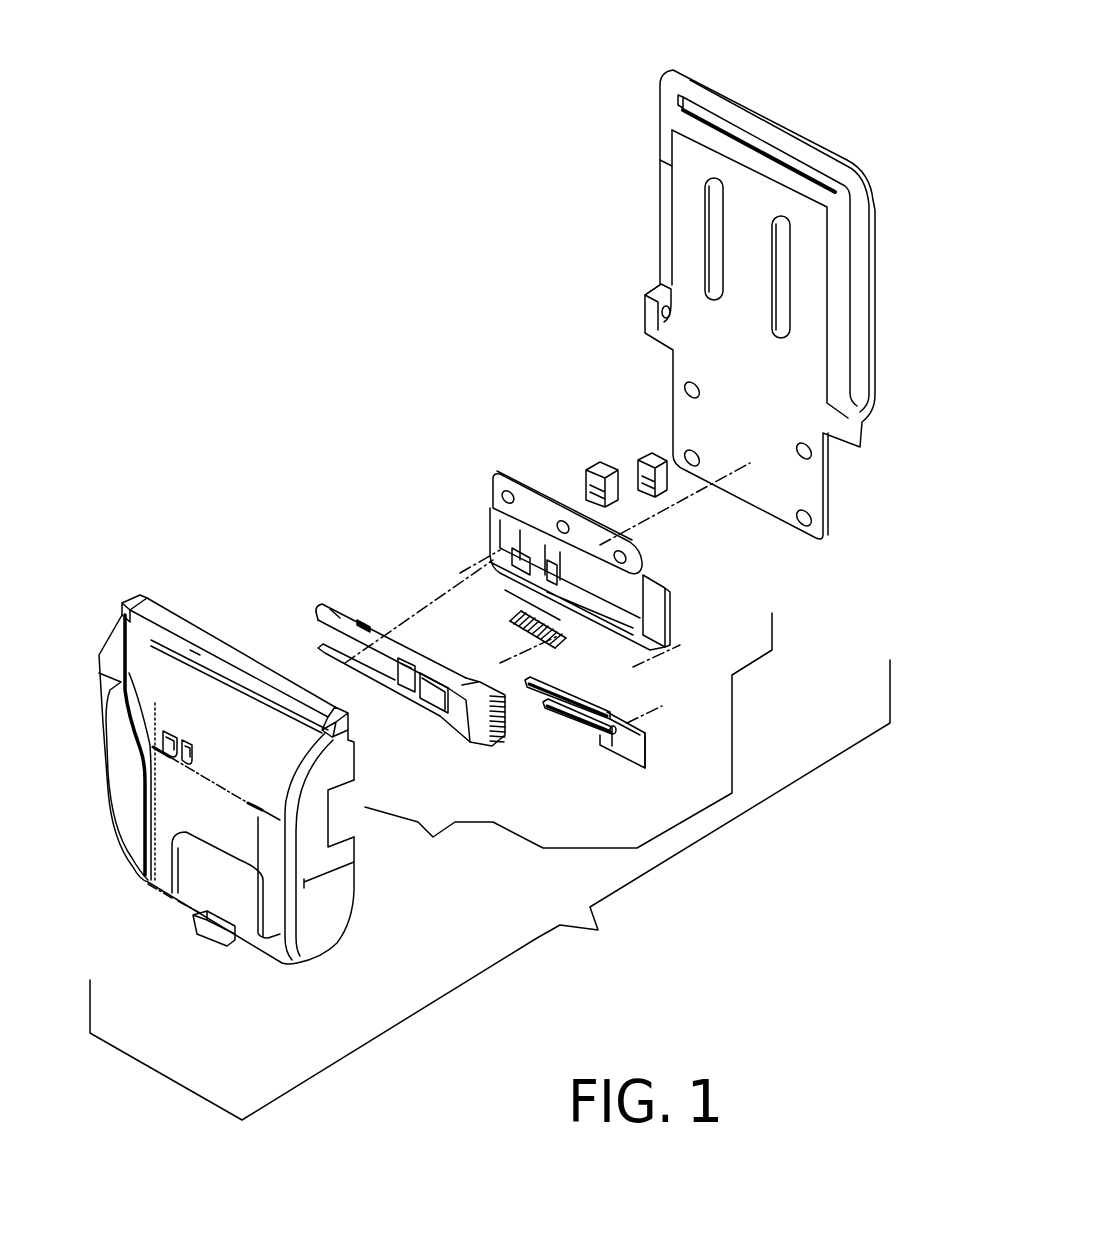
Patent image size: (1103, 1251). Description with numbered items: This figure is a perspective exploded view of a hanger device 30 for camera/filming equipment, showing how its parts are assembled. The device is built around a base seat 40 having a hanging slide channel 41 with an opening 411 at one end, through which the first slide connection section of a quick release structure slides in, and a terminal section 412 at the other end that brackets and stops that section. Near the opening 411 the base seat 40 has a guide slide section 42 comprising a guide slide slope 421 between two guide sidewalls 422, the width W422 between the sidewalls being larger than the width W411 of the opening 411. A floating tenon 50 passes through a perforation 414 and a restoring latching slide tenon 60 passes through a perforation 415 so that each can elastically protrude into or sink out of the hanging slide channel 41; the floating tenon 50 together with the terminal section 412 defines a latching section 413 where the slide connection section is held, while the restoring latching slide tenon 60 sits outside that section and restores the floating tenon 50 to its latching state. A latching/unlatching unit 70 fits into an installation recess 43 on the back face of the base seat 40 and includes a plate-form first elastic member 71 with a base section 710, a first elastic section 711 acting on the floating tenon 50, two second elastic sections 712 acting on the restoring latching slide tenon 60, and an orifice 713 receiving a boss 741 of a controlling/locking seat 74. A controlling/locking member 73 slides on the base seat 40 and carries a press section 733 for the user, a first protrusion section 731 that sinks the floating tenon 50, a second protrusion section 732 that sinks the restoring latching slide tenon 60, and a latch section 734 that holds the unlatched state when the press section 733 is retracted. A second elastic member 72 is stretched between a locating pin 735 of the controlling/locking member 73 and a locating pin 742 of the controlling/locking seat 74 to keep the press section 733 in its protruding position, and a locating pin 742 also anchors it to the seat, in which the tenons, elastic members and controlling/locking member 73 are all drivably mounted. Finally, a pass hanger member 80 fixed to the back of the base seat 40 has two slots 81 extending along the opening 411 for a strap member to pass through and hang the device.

The hanger device 30 is at (490, 890).
The base seat 40 is at (253, 677).
The hanging slide channel 41 is at (153, 897).
The opening 411 is at (200, 780).
The terminal section 412 is at (210, 943).
The latching section 413 is at (185, 907).
The perforation 414 is at (177, 734).
The perforation 415 is at (198, 738).
The guide slide section 42 is at (235, 637).
The guide slide slope 421 is at (196, 656).
The guide sidewalls 422 is at (140, 627).
The installation recess 43 is at (330, 812).
The floating tenon 50 is at (598, 461).
The restoring latching slide tenon 60 is at (650, 452).
The latching/unlatching unit 70 is at (568, 743).
The first elastic member 71 is at (616, 748).
The base section 710 is at (635, 756).
The first elastic section 711 is at (585, 756).
The second elastic sections 712 is at (567, 692).
The orifice 713 is at (648, 750).
The second elastic member 72 is at (518, 627).
The controlling/locking member 73 is at (379, 635).
The first protrusion section 731 is at (332, 613).
The second protrusion section 732 is at (317, 637).
The press section 733 is at (470, 743).
The latch section 734 is at (368, 664).
The locating pin 735 is at (389, 699).
The controlling/locking seat 74 is at (590, 574).
The boss 741 is at (647, 598).
The locating pin 742 is at (508, 677).
The pass hanger member 80 is at (722, 105).
The slots 81 is at (660, 162).
The width of the opening W411 is at (282, 960).
The width between the guide sidewalls W422 is at (332, 700).